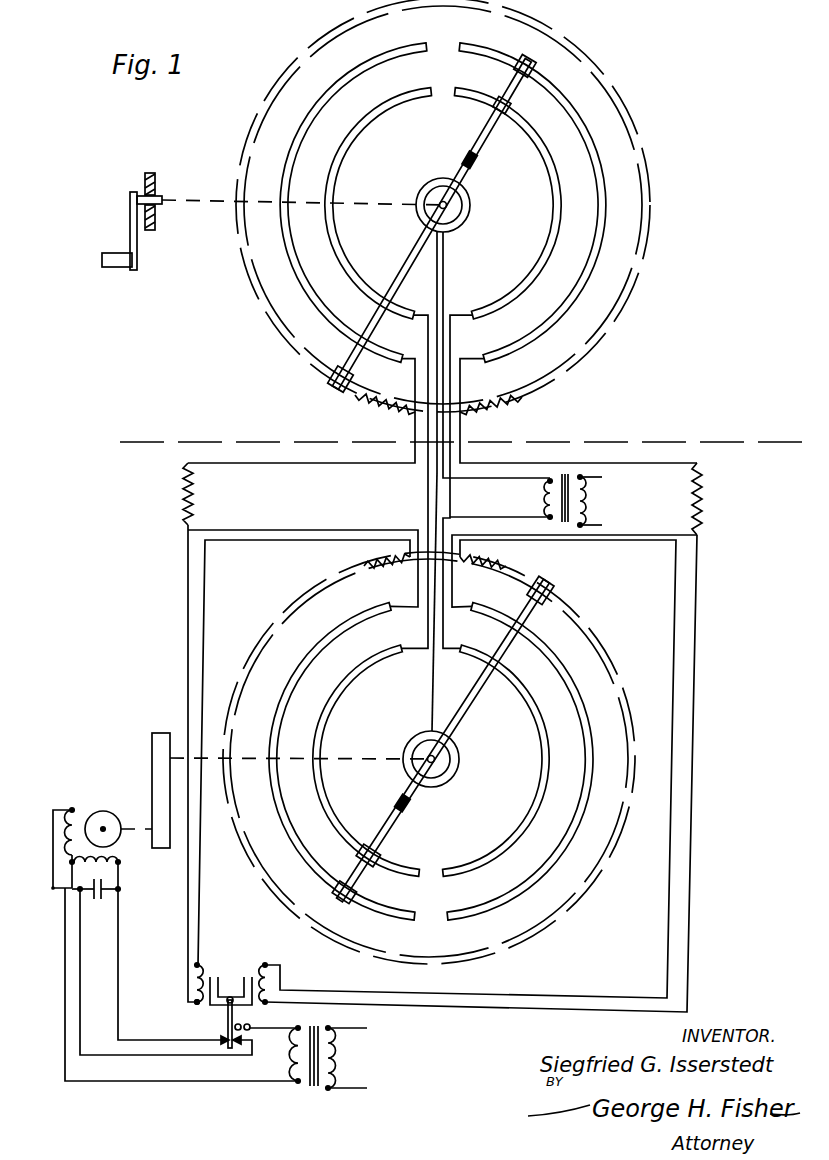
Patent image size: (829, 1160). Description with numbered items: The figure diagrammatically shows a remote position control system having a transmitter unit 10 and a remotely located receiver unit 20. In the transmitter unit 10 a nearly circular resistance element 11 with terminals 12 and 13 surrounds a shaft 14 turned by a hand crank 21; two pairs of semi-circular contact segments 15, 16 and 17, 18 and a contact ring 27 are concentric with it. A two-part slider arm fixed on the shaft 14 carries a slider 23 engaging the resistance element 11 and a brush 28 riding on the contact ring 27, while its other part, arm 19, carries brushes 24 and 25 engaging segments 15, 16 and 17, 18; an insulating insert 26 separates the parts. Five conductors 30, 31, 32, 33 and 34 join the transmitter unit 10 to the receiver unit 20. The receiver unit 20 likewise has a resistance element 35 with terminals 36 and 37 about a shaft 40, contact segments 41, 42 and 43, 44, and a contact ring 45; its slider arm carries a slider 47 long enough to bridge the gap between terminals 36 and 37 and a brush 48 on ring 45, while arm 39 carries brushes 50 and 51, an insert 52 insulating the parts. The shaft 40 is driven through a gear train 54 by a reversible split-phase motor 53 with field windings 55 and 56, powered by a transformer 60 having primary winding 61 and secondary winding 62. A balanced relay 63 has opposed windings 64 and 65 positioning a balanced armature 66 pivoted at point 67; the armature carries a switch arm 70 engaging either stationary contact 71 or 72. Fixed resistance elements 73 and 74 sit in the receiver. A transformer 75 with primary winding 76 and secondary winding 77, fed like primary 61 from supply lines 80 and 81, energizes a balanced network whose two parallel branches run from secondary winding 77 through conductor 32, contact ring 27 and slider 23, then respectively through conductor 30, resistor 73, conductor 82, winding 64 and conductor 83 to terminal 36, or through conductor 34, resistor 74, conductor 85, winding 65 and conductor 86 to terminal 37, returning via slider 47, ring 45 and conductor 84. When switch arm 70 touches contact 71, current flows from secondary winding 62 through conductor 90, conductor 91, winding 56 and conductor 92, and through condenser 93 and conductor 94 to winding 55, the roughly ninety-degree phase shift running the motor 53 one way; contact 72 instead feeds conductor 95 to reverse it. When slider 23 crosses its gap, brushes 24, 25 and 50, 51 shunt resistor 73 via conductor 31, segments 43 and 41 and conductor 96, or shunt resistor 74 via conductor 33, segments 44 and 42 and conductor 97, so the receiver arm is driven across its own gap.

The transmitter unit 10 is at (730, 78).
The resistance element 11 is at (629, 114).
The terminal 12 is at (410, 405).
The terminal 13 is at (466, 407).
The shaft 14 is at (437, 184).
The contact segment 15 is at (388, 57).
The contact segment 16 is at (492, 54).
The contact segment 17 is at (392, 105).
The contact segment 18 is at (485, 100).
The slider arm 19 is at (494, 134).
The receiver unit 20 is at (767, 508).
The hand crank 21 is at (137, 247).
The slider 23 is at (323, 388).
The brush 24 is at (537, 68).
The brush 25 is at (511, 108).
The insert 26 is at (474, 167).
The contact ring 27 is at (459, 226).
The brush 28 is at (431, 224).
The conductor 30 is at (414, 428).
The conductor 31 is at (427, 342).
The conductor 32 is at (444, 290).
The conductor 33 is at (451, 344).
The conductor 34 is at (461, 428).
The resistance element 35 is at (503, 569).
The terminal 36 is at (412, 566).
The terminal 37 is at (459, 566).
The slider arm 39 is at (390, 838).
The shaft 40 is at (460, 763).
The contact segment 41 is at (391, 910).
The contact segment 42 is at (471, 912).
The contact segment 43 is at (398, 870).
The contact segment 44 is at (470, 865).
The contact ring 45 is at (457, 752).
The slider 47 is at (552, 589).
The brush 48 is at (433, 731).
The brush 50 is at (340, 879).
The brush 51 is at (370, 843).
The insert 52 is at (416, 804).
The reversible motor 53 is at (85, 806).
The gear train 54 is at (152, 776).
The field winding 55 is at (66, 849).
The field winding 56 is at (93, 865).
The transformer 60 is at (310, 1092).
The primary winding 61 is at (334, 1052).
The secondary winding 62 is at (293, 1059).
The balanced relay 63 is at (226, 968).
The relay winding 64 is at (200, 958).
The relay winding 65 is at (261, 966).
The balanced armature 66 is at (214, 1007).
The pivot point 67 is at (231, 988).
The switch arm 70 is at (235, 1009).
The stationary contact 71 is at (228, 1034).
The stationary contact 72 is at (250, 1038).
The fixed resistance element 73 is at (196, 496).
The fixed resistance element 74 is at (695, 501).
The transformer 75 is at (565, 472).
The primary winding 76 is at (583, 513).
The secondary winding 77 is at (545, 495).
The supply line 80 is at (603, 479).
The supply line 81 is at (601, 527).
The conductor 82 is at (187, 613).
The conductor 83 is at (207, 614).
The conductor 84 is at (434, 680).
The conductor 85 is at (698, 637).
The conductor 86 is at (674, 623).
The conductor 90 is at (270, 1029).
The conductor 91 is at (118, 970).
The conductor 92 is at (110, 1079).
The condenser 93 is at (97, 898).
The conductor 94 is at (54, 890).
The conductor 95 is at (80, 1011).
The conductor 96 is at (282, 531).
The conductor 97 is at (630, 537).